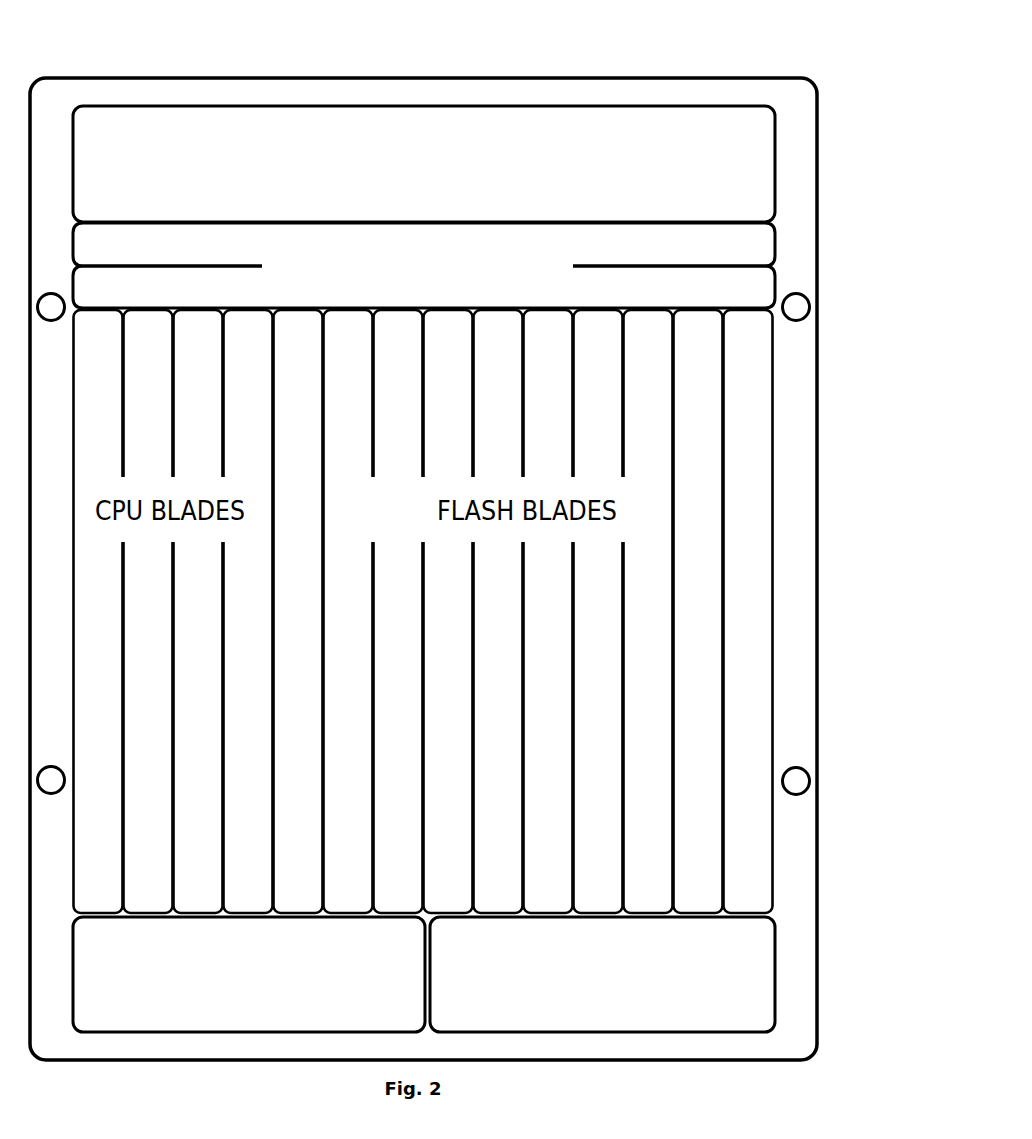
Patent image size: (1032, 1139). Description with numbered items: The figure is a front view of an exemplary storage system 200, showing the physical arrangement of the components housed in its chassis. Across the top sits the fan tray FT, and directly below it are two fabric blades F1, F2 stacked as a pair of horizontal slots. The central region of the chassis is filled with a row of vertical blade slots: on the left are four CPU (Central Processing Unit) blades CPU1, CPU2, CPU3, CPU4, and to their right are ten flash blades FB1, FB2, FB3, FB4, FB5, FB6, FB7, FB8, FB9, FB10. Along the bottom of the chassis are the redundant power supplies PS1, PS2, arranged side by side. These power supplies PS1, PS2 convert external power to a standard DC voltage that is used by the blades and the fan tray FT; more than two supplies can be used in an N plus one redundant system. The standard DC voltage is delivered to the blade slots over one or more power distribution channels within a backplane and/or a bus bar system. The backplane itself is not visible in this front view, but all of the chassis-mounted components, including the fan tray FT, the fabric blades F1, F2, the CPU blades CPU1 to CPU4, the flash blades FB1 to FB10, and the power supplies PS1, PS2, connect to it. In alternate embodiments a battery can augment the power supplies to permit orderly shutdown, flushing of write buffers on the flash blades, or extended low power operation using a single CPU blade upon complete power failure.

The storage system 200 is at (501, 64).
The fan tray FT is at (412, 188).
The fabric blade F1 is at (659, 255).
The fabric blade F2 is at (659, 298).
The CPU blade CPU1 is at (106, 845).
The CPU blade CPU2 is at (156, 845).
The CPU blade CPU3 is at (206, 845).
The CPU blade CPU4 is at (256, 845).
The flash blade FB1 is at (306, 848).
The flash blade FB2 is at (356, 848).
The flash blade FB3 is at (406, 848).
The flash blade FB4 is at (456, 848).
The flash blade FB5 is at (506, 848).
The flash blade FB6 is at (556, 848).
The flash blade FB7 is at (606, 848).
The flash blade FB8 is at (656, 848).
The flash blade FB9 is at (706, 848).
The flash blade FB10 is at (756, 843).
The power supply PS1 is at (232, 986).
The power supply PS2 is at (582, 986).